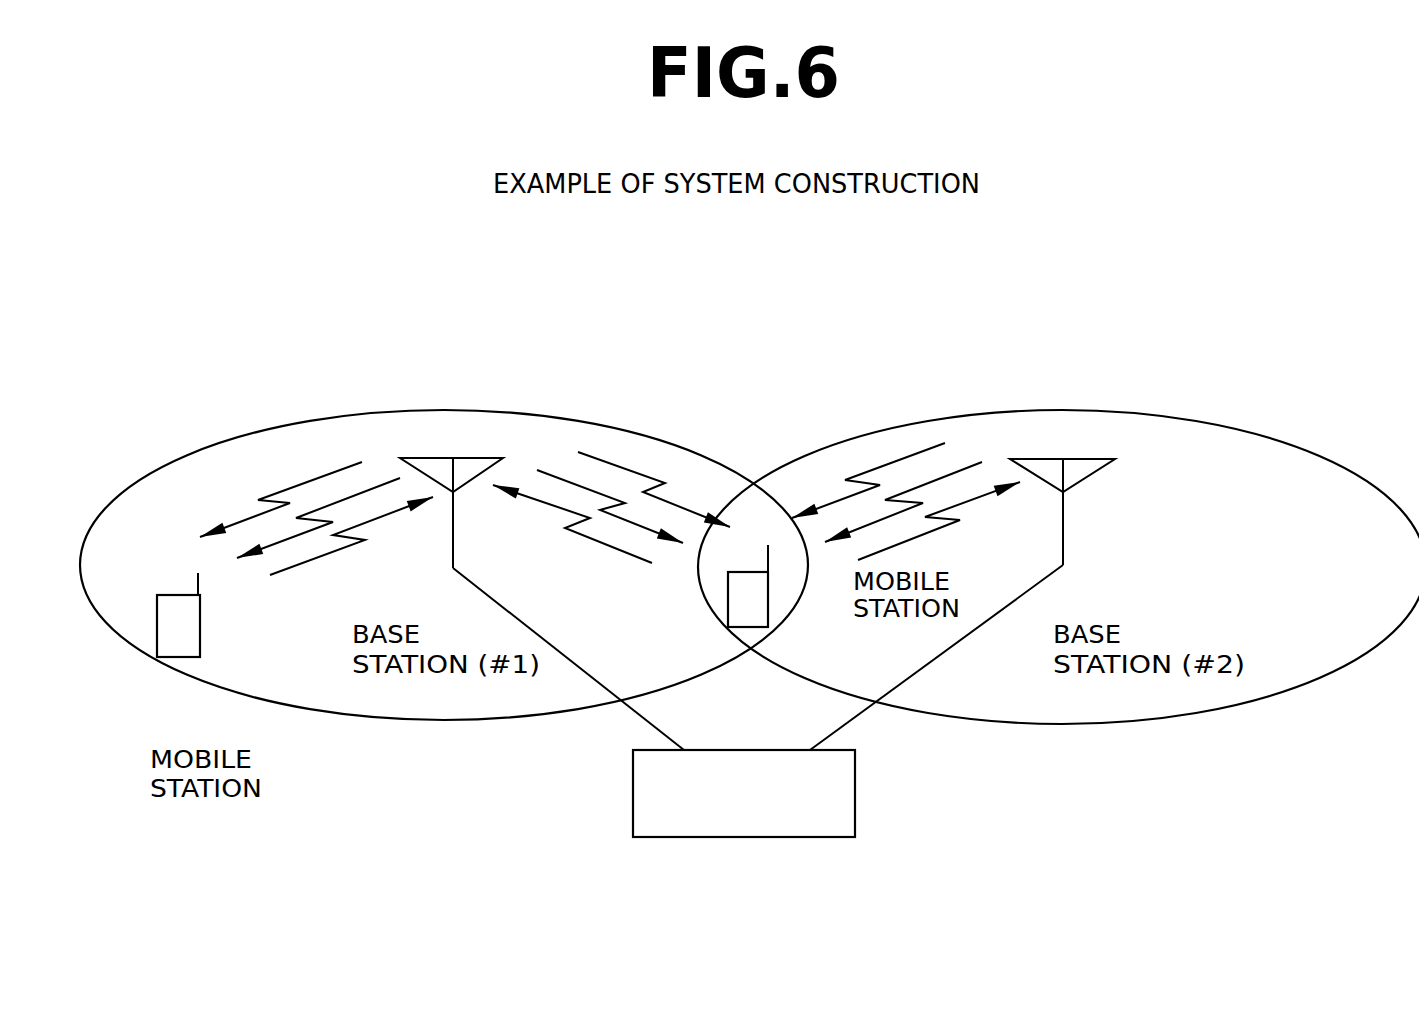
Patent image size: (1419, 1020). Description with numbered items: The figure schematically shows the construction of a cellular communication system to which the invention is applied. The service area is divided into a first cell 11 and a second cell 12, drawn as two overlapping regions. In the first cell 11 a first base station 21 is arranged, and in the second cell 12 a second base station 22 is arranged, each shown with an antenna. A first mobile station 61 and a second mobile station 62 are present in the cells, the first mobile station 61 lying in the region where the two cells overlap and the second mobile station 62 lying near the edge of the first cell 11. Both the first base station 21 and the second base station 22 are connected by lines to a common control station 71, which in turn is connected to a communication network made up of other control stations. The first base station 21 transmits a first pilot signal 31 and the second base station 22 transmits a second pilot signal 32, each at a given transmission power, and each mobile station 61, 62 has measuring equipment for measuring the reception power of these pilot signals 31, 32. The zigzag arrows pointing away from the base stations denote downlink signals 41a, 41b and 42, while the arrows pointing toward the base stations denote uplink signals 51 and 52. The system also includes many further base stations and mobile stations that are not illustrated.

The first cell 11 is at (460, 410).
The second cell 12 is at (1107, 412).
The first base station 21 is at (455, 568).
The second base station 22 is at (1063, 565).
The first pilot signal 31 is at (288, 487).
The second pilot signal 32 is at (880, 466).
The downlink signal 41a is at (643, 527).
The downlink signal 41b is at (942, 478).
The downlink signal 42 is at (350, 495).
The uplink signal 51 is at (608, 546).
The uplink signal 52 is at (337, 553).
The first mobile station 61 is at (770, 582).
The second mobile station 62 is at (185, 658).
The common control station 71 is at (855, 798).